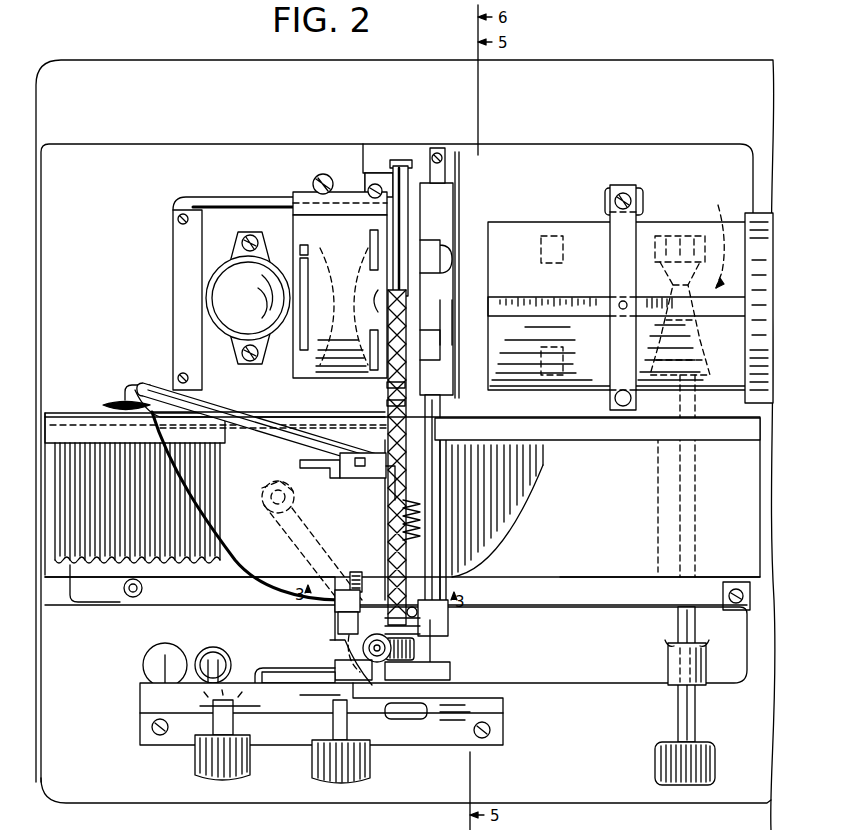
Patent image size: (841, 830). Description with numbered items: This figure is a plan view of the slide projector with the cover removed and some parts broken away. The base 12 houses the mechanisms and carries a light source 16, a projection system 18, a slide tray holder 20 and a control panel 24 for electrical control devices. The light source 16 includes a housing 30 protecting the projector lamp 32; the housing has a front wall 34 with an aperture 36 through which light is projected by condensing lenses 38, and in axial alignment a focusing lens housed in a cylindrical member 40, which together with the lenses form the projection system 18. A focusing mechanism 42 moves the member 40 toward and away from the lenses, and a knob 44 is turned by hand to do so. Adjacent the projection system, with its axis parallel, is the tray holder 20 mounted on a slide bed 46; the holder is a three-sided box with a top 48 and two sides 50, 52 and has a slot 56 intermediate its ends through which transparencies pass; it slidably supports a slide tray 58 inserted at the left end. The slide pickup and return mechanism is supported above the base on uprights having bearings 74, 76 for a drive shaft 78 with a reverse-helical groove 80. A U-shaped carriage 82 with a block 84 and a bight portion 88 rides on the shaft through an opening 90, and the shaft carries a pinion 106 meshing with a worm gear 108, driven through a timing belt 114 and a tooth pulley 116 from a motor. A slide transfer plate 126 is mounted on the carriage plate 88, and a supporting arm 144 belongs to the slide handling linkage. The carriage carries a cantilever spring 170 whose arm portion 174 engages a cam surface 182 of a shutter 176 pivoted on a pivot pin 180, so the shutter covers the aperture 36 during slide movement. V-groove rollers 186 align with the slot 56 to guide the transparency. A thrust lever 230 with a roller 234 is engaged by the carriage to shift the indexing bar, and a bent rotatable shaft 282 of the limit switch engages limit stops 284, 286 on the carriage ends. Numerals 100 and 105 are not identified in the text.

The base 12 is at (74, 60).
The light source 16 is at (146, 234).
The projection system 18 is at (549, 180).
The slide tray holder 20 is at (163, 592).
The control panel 24 is at (112, 724).
The housing 30 is at (222, 197).
The projector lamp 32 is at (232, 270).
The front wall 34 is at (410, 235).
The aperture 36 is at (412, 248).
The condensing lenses 38 is at (340, 276).
The cylindrical member 40 is at (560, 222).
The focusing mechanism 42 is at (711, 381).
The knob 44 is at (702, 748).
The slide bed 46 is at (98, 602).
The top 48 is at (254, 553).
The side 50 is at (205, 575).
The side 52 is at (124, 396).
The slot 56 is at (436, 612).
The slide tray 58 is at (58, 413).
The bearing 74 is at (408, 638).
The bearing 76 is at (368, 175).
The drive shaft 78 is at (388, 388).
The groove 80 is at (388, 408).
The carriage 82 is at (382, 470).
The block 84 is at (352, 466).
The bight portion 88 is at (398, 508).
The opening 90 is at (386, 440).
The bracket 100 is at (346, 598).
The lens element 105 is at (369, 302).
The pinion 106 is at (412, 652).
The worm gear 108 is at (376, 662).
The timing belt 114 is at (265, 508).
The tooth pulley 116 is at (278, 488).
The slide transfer plate 126 is at (440, 432).
The supporting arm 144 is at (390, 478).
The cantilever spring 170 is at (500, 470).
The arm portion 174 is at (448, 395).
The shutter 176 is at (458, 215).
The pivot pin 180 is at (440, 150).
The cam surface 182 is at (462, 185).
The V-groove rollers 186 is at (440, 330).
The thrust lever 230 is at (348, 616).
The roller 234 is at (352, 634).
The rotatable shaft 282 is at (240, 426).
The limit stop 284 is at (342, 440).
The limit stop 286 is at (356, 572).